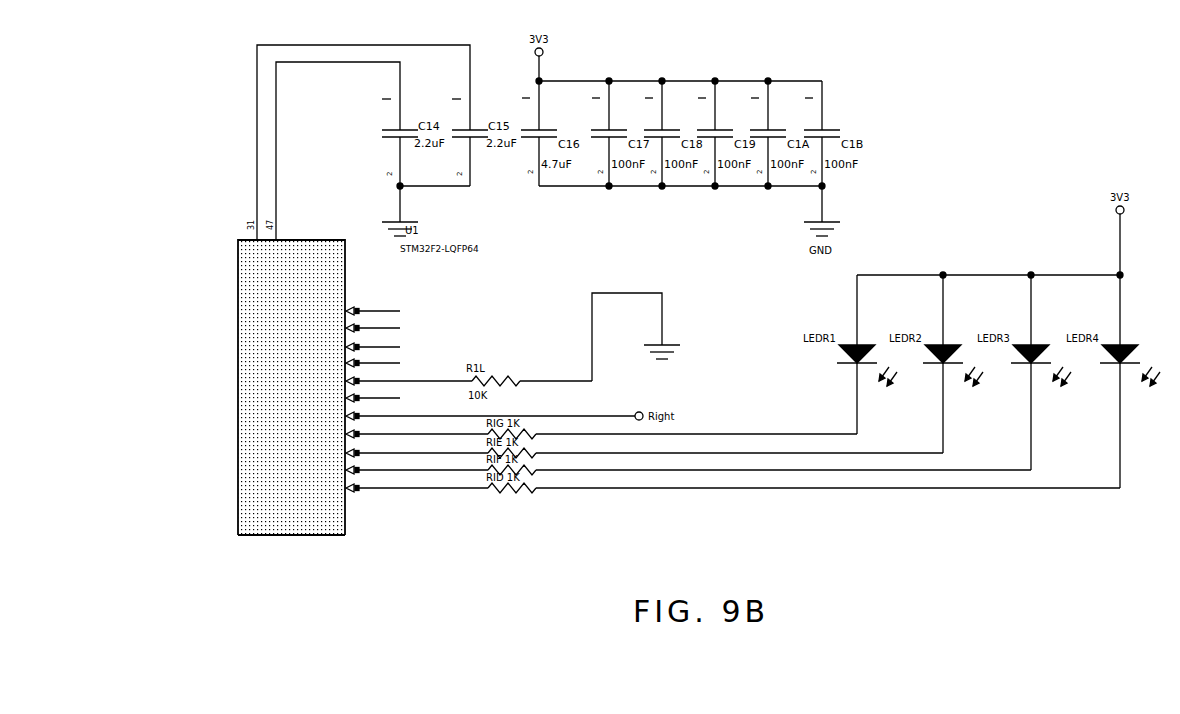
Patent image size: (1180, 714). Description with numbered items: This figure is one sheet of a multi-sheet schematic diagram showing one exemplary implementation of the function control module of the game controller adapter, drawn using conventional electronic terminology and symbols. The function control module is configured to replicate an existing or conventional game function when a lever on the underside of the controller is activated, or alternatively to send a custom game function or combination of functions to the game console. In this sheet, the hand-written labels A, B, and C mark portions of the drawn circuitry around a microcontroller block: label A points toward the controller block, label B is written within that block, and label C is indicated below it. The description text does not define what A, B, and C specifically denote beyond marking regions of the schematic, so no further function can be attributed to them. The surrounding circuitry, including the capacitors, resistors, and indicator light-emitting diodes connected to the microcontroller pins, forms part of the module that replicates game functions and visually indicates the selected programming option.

The microcontroller circuit A is at (240, 388).
The microcontroller U1 B is at (319, 387).
The microcontroller bottom portion C is at (275, 537).